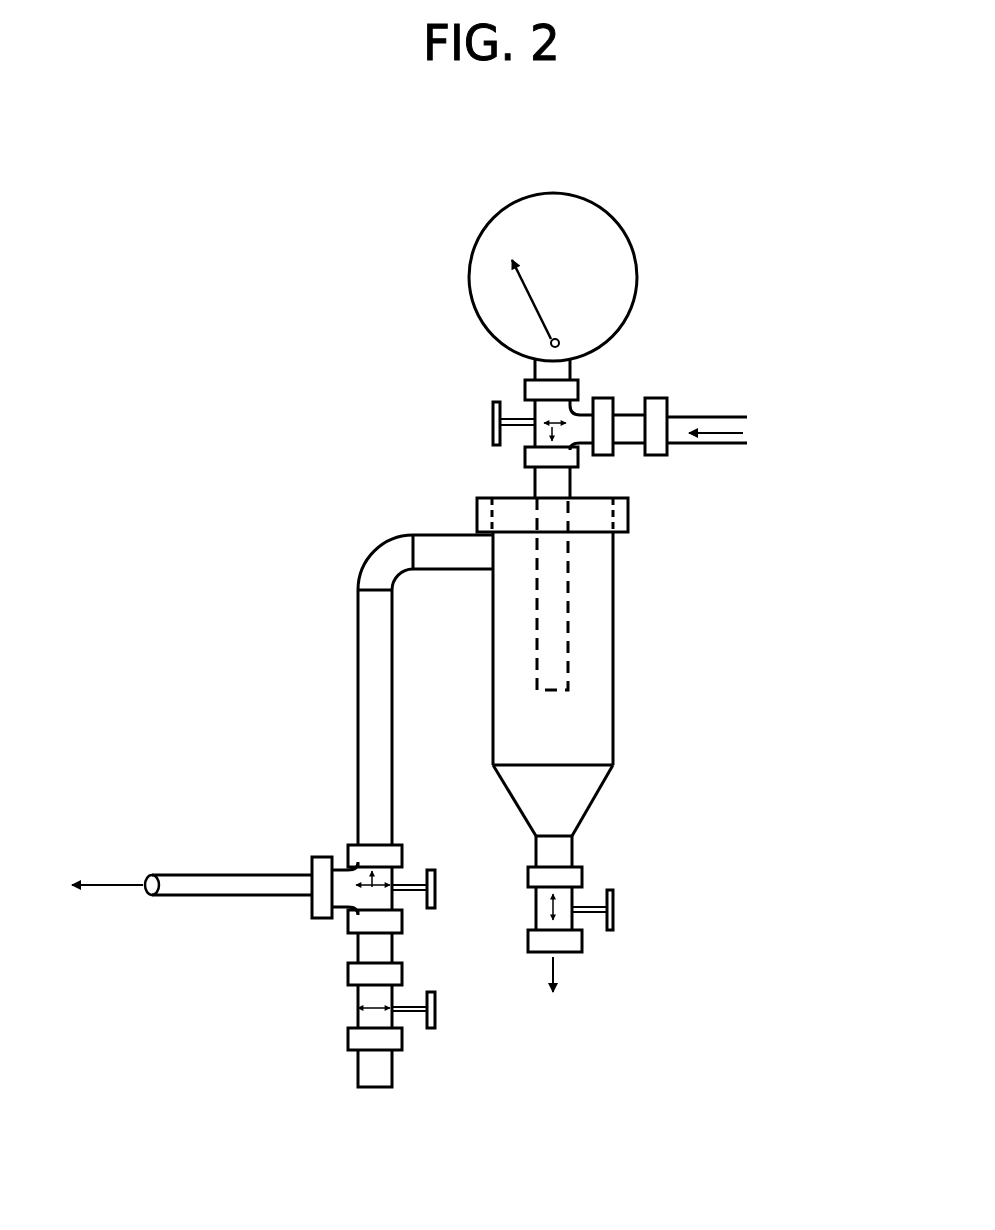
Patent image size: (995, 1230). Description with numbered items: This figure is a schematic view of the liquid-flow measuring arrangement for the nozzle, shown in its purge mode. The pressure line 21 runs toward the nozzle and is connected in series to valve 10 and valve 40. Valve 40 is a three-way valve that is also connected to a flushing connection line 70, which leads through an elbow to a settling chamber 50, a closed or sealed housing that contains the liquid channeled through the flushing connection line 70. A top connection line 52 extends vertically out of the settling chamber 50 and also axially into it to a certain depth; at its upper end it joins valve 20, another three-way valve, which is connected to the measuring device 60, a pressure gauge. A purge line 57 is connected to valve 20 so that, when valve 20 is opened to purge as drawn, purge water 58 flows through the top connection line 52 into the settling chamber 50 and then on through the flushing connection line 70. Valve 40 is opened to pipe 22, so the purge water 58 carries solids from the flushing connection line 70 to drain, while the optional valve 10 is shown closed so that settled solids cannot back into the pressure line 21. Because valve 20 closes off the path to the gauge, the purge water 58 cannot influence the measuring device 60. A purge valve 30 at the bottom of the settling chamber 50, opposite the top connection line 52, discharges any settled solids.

The valve 10 is at (393, 1003).
The valve 20 is at (535, 414).
The pressure line 21 is at (388, 1072).
The pipe 22 is at (220, 882).
The purge valve 30 is at (575, 903).
The valve 40 is at (393, 878).
The settling chamber 50 is at (583, 738).
The top connection line 52 is at (555, 560).
The purge line 57 is at (685, 415).
The purge water 58 is at (743, 432).
The measuring device 60 is at (607, 218).
The flushing connection line 70 is at (360, 603).